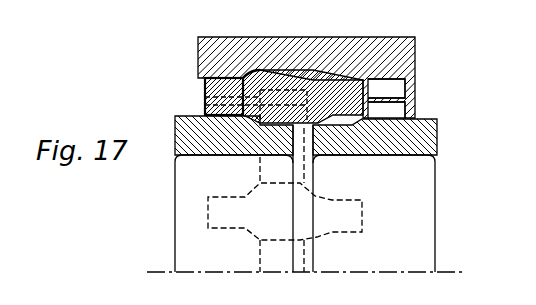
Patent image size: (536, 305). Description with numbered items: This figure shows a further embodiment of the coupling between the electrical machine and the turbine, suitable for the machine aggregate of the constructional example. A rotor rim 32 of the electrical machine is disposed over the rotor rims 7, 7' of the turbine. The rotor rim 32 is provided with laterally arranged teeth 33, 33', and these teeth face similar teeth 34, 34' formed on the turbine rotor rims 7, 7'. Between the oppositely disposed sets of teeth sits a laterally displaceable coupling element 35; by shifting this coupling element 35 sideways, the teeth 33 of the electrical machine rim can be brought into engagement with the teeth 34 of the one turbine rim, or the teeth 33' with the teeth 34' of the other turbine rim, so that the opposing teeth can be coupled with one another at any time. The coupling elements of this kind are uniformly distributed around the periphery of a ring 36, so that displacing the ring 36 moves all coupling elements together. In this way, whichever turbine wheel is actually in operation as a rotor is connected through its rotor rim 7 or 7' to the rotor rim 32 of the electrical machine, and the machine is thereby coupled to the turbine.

The rotor rim 7 is at (232, 135).
The rotor rim 7' is at (374, 135).
The rotor rim 32 is at (303, 77).
The teeth 33 is at (223, 96).
The teeth 33' is at (409, 87).
The teeth 34 is at (204, 106).
The teeth 34' is at (411, 105).
The coupling element 35 is at (245, 241).
The ring 36 is at (260, 167).